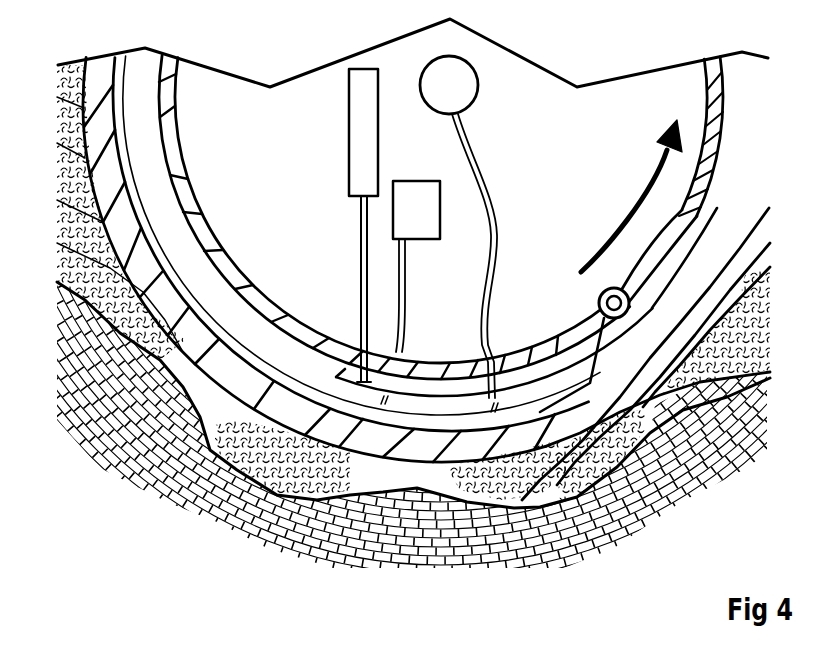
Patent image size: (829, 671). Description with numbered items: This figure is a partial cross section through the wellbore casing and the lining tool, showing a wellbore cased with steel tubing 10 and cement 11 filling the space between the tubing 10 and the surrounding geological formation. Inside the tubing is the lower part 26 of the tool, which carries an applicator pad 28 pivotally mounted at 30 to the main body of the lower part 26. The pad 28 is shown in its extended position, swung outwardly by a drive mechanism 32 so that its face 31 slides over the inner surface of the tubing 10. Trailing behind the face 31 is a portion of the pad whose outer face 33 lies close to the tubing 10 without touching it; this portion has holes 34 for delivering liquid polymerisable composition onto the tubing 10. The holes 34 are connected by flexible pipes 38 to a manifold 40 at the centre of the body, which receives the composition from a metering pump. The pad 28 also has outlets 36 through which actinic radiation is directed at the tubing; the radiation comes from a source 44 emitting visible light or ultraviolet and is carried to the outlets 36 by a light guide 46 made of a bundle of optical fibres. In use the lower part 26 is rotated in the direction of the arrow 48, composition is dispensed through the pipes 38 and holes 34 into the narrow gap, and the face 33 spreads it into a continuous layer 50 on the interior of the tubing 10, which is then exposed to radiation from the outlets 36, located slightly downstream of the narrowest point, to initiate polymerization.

The steel tubing 10 is at (426, 309).
The cement 11 is at (261, 521).
The lower part of the tool 26 is at (471, 217).
The applicator pad 28 is at (663, 397).
The pivot mounting 30 is at (572, 301).
The face of the pad 31 is at (590, 472).
The drive mechanism 32 is at (337, 132).
The outer face 33 is at (526, 412).
The holes 34 is at (492, 515).
The outlets 36 is at (370, 411).
The flexible pipes 38 is at (506, 256).
The manifold 40 is at (483, 89).
The source 44 is at (359, 216).
The light guide 46 is at (428, 295).
The arrow 48 is at (631, 196).
The continuous layer 50 is at (361, 235).